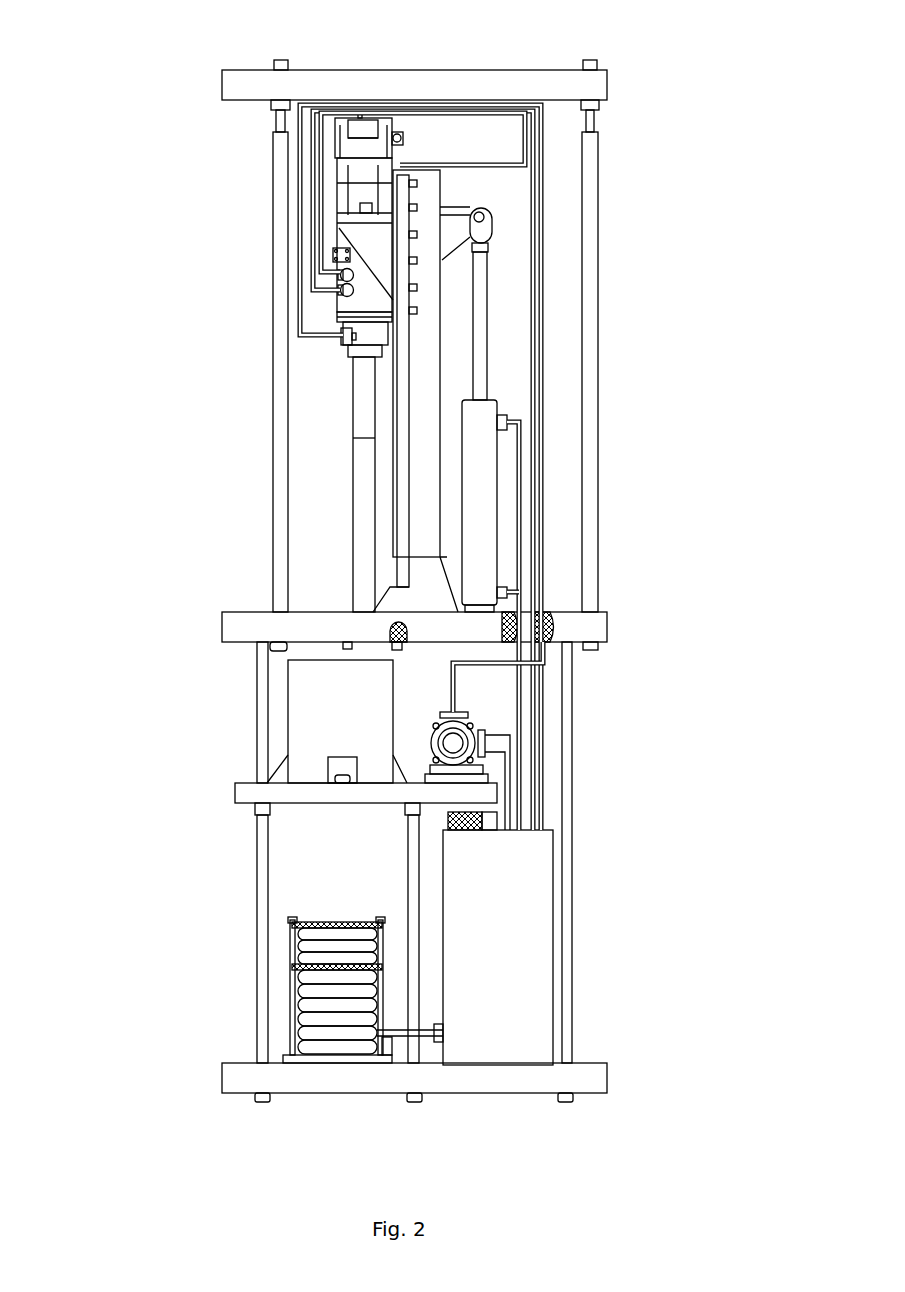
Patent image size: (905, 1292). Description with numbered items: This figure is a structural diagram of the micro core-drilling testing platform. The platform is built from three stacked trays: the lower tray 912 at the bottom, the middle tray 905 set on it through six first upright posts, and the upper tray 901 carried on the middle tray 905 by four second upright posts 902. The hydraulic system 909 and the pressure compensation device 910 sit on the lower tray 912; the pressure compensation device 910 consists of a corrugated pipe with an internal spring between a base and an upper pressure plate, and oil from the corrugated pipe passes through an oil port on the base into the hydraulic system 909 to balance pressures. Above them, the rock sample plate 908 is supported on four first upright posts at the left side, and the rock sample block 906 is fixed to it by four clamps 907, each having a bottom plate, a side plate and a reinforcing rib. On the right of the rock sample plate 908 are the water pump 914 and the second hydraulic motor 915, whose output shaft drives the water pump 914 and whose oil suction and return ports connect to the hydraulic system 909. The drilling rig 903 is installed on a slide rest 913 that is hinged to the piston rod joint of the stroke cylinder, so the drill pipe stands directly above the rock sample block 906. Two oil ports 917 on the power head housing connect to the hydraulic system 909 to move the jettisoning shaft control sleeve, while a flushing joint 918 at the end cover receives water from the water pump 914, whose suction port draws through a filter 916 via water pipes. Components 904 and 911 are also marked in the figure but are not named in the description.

The upper tray 901 is at (280, 91).
The second upright posts 902 is at (272, 237).
The drilling rig 903 is at (360, 300).
The oil ports 917 is at (330, 268).
The flushing joint 918 is at (343, 333).
The slide rest 913 is at (450, 230).
The sensor 904 is at (392, 632).
The middle tray 905 is at (327, 627).
The rock sample block 906 is at (352, 700).
The clamps 907 is at (348, 772).
The rock sample plate 908 is at (278, 792).
The hydraulic system 909 is at (440, 893).
The water pump 914 is at (465, 718).
The second hydraulic motor 915 is at (453, 743).
The filter 916 is at (488, 820).
The pressure compensation device 910 is at (332, 936).
The bellows pipe 911 is at (383, 1033).
The lower tray 912 is at (310, 1077).